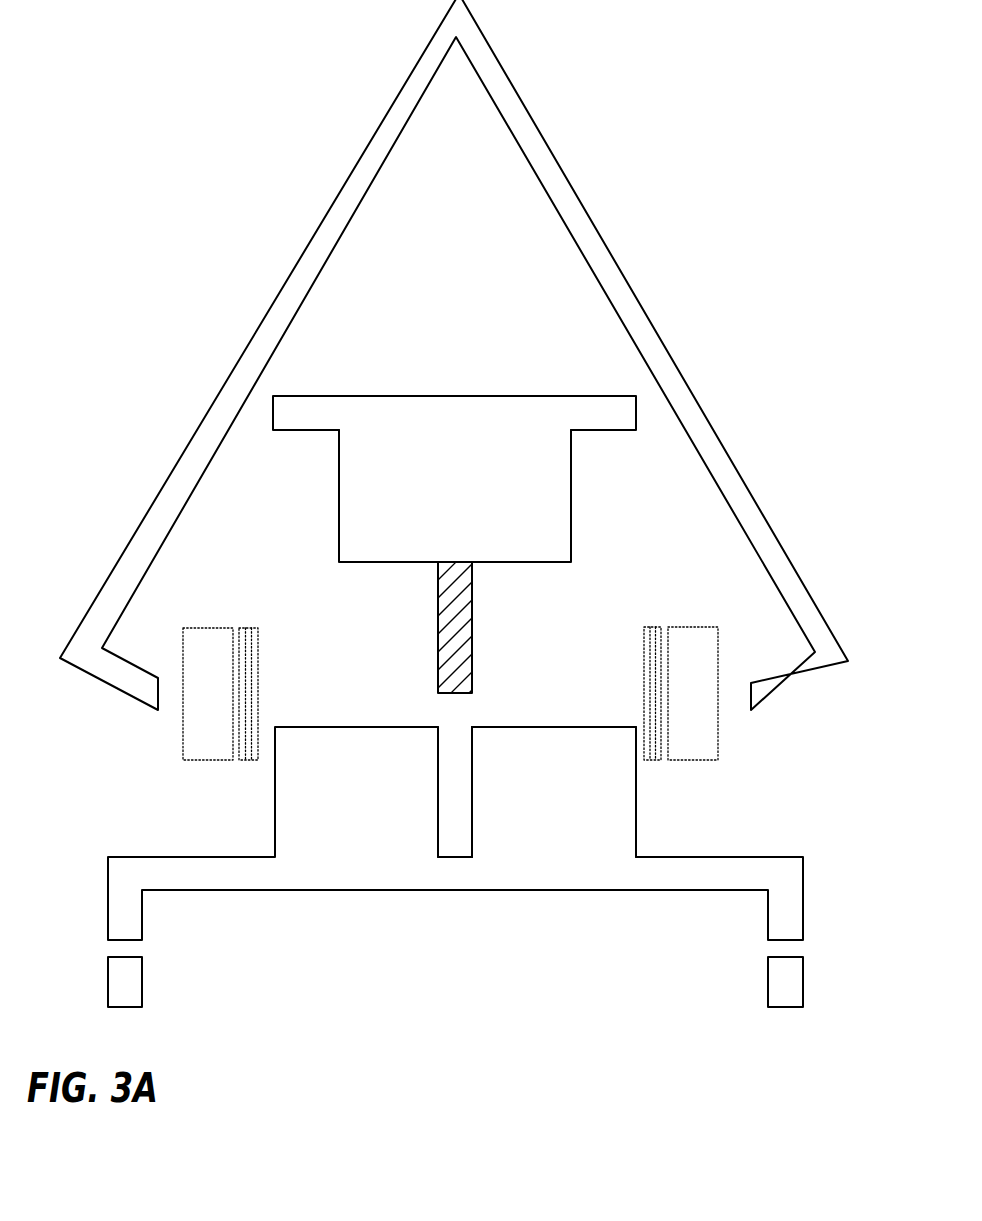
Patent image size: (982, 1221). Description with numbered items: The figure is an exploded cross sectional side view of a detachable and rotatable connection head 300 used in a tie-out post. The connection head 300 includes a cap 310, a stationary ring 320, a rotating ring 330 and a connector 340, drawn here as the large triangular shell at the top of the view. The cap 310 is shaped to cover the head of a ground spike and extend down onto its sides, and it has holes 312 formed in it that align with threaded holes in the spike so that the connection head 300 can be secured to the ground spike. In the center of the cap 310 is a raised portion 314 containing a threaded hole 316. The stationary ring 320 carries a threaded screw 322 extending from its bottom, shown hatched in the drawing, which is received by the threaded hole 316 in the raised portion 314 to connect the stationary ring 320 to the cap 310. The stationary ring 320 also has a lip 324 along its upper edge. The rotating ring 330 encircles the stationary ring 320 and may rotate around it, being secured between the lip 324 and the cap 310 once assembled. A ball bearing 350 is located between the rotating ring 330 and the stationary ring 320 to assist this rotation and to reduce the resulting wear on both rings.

The connection head 300 is at (262, 183).
The cap 310 is at (464, 875).
The holes 312 is at (142, 940).
The raised portion 314 is at (636, 808).
The threaded hole 316 is at (455, 808).
The stationary ring 320 is at (461, 479).
The threaded screw 322 is at (472, 600).
The lip 324 is at (287, 430).
The rotating ring 330 is at (187, 733).
The connector 340 is at (242, 363).
The ball bearing 350 is at (257, 662).